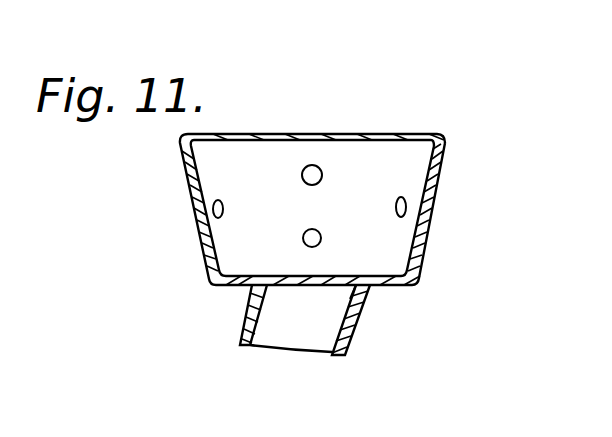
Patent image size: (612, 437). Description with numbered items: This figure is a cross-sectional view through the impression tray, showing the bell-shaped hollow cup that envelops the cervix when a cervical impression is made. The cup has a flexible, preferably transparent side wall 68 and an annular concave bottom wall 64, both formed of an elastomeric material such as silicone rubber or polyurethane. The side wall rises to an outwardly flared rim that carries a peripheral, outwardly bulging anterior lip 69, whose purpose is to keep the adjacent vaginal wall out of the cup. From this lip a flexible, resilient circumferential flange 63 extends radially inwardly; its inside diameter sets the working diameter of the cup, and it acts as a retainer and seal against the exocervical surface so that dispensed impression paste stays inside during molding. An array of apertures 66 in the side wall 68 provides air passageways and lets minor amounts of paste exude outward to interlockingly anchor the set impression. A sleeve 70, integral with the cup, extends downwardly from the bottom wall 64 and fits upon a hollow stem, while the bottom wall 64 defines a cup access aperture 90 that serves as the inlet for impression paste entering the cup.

The circumferential flange 63 is at (300, 133).
The annular bottom wall 64 is at (232, 286).
The apertures 66 is at (304, 231).
The side wall 68 is at (422, 219).
The anterior lip 69 is at (446, 149).
The sleeve 70 is at (352, 331).
The cup access aperture 90 is at (352, 288).